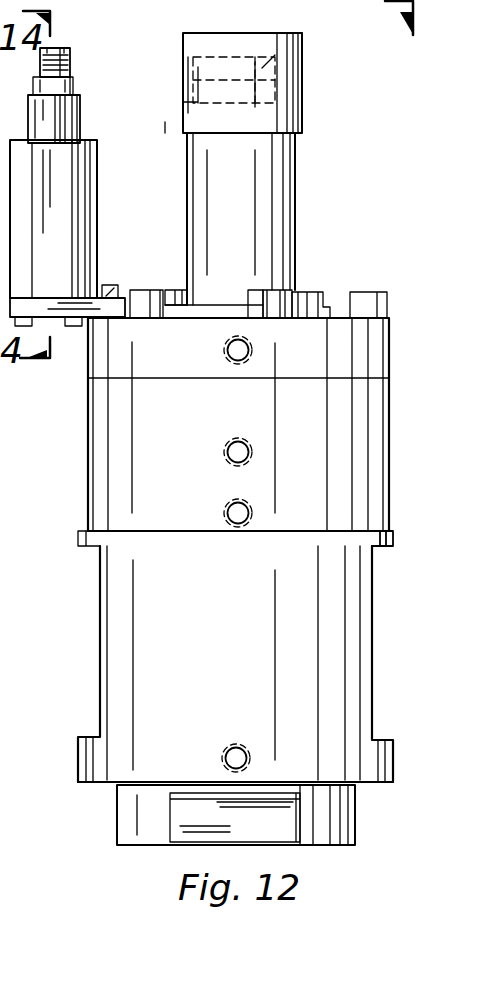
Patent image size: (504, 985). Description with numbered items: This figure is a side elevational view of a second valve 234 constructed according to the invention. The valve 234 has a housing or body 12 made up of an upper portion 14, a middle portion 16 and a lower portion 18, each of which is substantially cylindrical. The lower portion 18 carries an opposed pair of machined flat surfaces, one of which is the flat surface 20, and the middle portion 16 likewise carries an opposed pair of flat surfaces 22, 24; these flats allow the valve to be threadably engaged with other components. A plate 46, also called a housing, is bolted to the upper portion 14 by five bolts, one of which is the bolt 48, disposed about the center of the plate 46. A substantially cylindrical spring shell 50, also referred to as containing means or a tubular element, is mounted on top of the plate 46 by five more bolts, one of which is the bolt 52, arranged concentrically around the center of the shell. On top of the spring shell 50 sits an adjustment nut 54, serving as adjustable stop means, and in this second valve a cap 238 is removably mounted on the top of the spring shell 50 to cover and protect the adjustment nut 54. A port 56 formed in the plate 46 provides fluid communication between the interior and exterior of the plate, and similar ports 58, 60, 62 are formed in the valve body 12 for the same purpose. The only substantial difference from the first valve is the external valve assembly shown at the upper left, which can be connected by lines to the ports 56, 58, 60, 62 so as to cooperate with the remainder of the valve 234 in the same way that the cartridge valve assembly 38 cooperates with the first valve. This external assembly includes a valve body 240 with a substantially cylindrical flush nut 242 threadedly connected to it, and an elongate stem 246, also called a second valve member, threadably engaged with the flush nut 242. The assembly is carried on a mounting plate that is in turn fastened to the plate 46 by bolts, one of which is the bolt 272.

The housing or body 12 is at (72, 537).
The upper portion 14 is at (376, 517).
The middle portion 16 is at (348, 703).
The lower portion 18 is at (333, 827).
The flat surface 20 is at (273, 841).
The flat surface 22 is at (100, 672).
The flat surface 24 is at (375, 637).
The cartridge valve assembly 38 is at (13, 444).
The plate 46 is at (376, 358).
The bolt 48 is at (361, 292).
The spring shell 50 is at (277, 172).
The bolt 52 is at (310, 293).
The adjustment nut 54 is at (297, 33).
The port 56 is at (232, 352).
The port 58 is at (232, 452).
The port 60 is at (240, 517).
The port 62 is at (241, 747).
The valve 234 is at (164, 120).
The cap 238 is at (302, 95).
The valve body 240 is at (84, 196).
The flush nut 242 is at (63, 124).
The elongate stem 246 is at (60, 58).
The bolt 272 is at (112, 286).